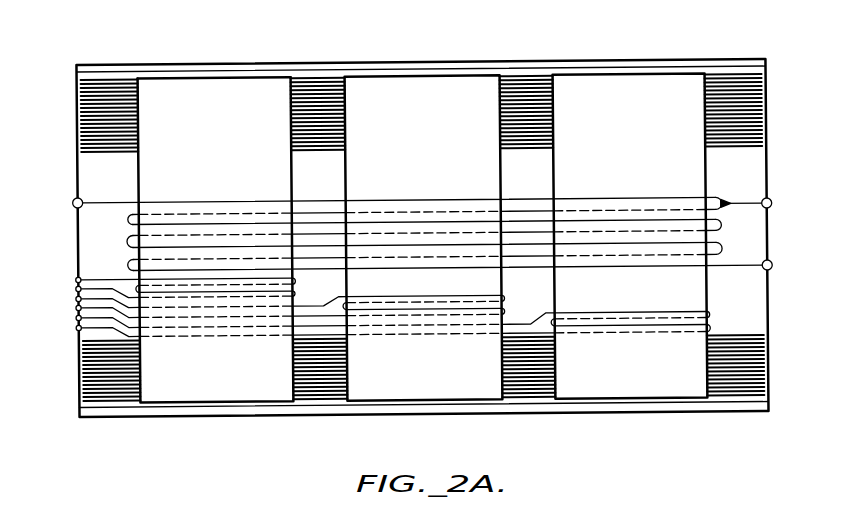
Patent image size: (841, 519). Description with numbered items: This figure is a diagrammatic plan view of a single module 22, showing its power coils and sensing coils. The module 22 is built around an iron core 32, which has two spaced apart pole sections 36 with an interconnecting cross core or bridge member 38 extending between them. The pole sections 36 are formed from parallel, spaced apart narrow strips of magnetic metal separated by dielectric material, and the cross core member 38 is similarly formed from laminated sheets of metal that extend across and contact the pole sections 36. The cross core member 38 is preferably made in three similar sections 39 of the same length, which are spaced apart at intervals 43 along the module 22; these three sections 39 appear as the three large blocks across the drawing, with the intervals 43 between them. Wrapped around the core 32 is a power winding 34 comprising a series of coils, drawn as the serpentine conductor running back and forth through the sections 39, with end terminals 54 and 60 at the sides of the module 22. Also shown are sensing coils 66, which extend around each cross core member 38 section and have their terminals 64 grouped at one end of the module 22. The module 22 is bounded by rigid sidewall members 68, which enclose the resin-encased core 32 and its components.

The module 22 is at (667, 58).
The iron core 32 is at (406, 206).
The power winding 34 is at (458, 247).
The pole sections 36 is at (723, 92).
The cross core member 38 is at (231, 88).
The sections 39 is at (196, 142).
The intervals 43 is at (318, 168).
The end terminal 54 is at (75, 198).
The end terminal 60 is at (770, 202).
The terminals 64 is at (77, 294).
The sensing coils 66 is at (377, 318).
The sidewall members 68 is at (594, 63).